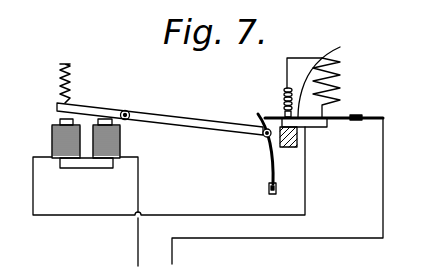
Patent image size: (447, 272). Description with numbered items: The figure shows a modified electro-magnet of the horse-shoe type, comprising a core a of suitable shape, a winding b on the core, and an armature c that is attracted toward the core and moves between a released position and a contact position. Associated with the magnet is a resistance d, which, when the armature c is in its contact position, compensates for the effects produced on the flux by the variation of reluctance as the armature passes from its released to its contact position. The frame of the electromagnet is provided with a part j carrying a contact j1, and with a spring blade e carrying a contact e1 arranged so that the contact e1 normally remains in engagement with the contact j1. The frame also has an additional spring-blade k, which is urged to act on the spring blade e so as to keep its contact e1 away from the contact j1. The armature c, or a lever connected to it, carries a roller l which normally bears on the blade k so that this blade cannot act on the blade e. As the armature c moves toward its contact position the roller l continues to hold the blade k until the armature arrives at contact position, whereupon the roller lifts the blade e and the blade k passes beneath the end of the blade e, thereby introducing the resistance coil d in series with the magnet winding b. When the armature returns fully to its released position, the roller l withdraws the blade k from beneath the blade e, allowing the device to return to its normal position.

The core a is at (103, 121).
The winding b is at (56, 143).
The armature c is at (124, 110).
The resistance d is at (338, 72).
The spring blade e is at (343, 117).
The contact e1 is at (325, 72).
The part j is at (297, 146).
The contact j1 is at (279, 112).
The additional spring-blade k is at (268, 169).
The roller l is at (244, 125).